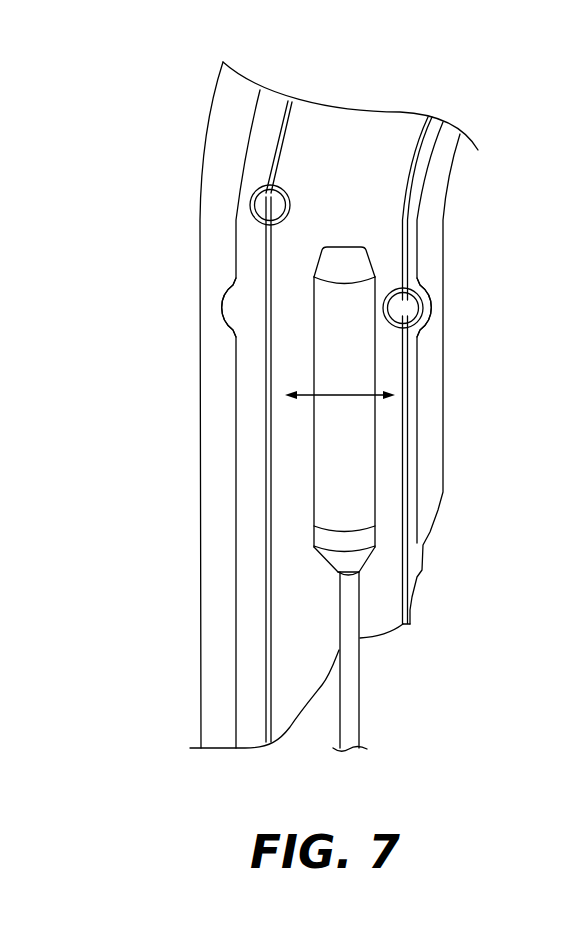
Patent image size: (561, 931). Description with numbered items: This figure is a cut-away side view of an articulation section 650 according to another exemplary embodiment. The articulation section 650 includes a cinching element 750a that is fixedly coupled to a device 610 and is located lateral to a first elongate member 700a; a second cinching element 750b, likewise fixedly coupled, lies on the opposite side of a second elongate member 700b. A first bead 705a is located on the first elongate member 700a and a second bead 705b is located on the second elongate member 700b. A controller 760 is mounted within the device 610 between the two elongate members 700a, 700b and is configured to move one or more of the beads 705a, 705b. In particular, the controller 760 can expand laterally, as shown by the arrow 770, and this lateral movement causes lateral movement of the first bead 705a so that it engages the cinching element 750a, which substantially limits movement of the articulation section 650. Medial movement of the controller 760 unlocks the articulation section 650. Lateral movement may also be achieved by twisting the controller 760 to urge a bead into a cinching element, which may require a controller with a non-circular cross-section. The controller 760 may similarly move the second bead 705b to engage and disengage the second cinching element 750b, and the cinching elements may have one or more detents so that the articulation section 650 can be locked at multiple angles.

The device 610 is at (132, 508).
The articulation section 650 is at (200, 79).
The first elongate member 700a is at (432, 104).
The second elongate member 700b is at (295, 88).
The first bead 705a is at (422, 317).
The second bead 705b is at (251, 206).
The cinching element 750a is at (437, 272).
The second cinching element 750b is at (200, 308).
The controller 760 is at (351, 219).
The arrow 770 is at (340, 395).